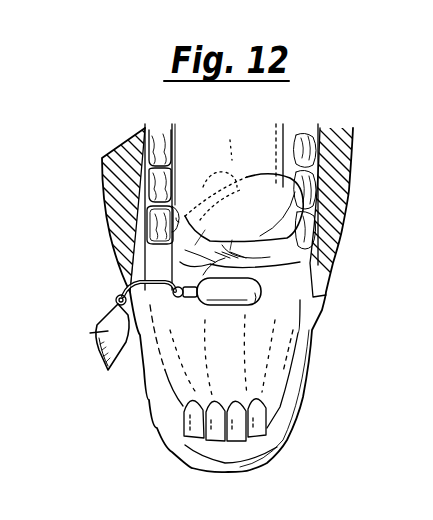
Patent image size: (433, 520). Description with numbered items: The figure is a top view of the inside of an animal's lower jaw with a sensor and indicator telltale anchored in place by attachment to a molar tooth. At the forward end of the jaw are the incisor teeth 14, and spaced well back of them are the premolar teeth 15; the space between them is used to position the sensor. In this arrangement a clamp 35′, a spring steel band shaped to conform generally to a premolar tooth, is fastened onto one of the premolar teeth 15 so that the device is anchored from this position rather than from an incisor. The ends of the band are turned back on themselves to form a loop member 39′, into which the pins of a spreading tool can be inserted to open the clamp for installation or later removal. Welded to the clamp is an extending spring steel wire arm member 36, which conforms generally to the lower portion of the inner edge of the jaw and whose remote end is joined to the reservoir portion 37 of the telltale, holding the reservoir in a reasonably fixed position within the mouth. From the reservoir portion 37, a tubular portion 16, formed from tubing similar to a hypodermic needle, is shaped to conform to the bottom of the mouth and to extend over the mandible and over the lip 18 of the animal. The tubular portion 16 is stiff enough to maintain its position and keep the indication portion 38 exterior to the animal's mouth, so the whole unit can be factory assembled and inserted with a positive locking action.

The incisor teeth 14 is at (227, 455).
The premolar teeth 15 is at (147, 224).
The clamp 35′ is at (147, 224).
The lip 18 is at (132, 250).
The spring steel wire arm member 36 is at (150, 280).
The tubular portion 16 is at (130, 286).
The indication portion 38 is at (90, 333).
The loop member 39′ is at (177, 215).
The reservoir portion 37 is at (260, 300).